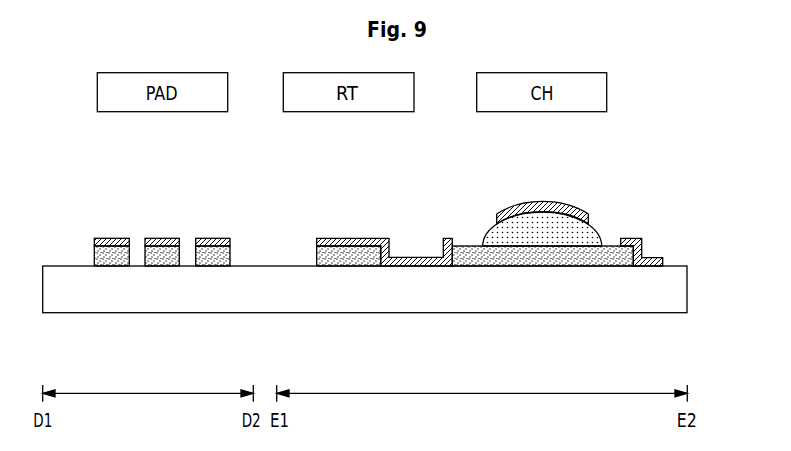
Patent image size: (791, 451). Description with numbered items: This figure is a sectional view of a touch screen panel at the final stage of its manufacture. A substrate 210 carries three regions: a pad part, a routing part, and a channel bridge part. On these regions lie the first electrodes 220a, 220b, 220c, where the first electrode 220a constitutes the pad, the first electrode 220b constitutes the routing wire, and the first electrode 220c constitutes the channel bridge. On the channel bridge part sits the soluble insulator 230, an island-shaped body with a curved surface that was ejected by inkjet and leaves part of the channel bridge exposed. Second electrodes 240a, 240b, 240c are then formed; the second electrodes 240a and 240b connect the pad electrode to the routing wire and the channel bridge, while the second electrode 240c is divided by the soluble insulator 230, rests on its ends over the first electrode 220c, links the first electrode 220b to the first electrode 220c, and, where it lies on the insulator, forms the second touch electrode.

The substrate 210 is at (675, 292).
The first electrode 220a is at (162, 267).
The first electrode 220b is at (343, 267).
The first electrode 220c is at (540, 267).
The soluble insulator 230 is at (495, 240).
The second electrode 240a is at (210, 237).
The second electrode 240b is at (347, 238).
The second electrode 240c is at (538, 202).